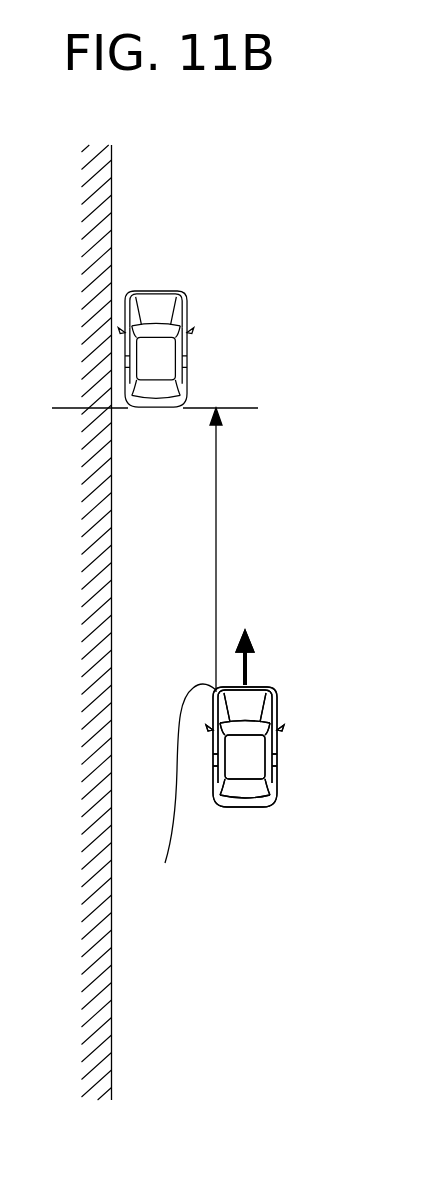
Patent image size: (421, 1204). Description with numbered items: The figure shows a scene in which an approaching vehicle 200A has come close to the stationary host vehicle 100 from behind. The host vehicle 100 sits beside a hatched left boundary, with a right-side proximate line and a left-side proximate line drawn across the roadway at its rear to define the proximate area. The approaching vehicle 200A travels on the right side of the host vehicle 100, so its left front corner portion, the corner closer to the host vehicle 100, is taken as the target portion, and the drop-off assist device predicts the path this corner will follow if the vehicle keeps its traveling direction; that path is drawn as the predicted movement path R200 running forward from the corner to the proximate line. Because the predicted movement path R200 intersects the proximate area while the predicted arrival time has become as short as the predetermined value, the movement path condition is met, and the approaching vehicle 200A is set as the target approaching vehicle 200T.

The host vehicle 100 is at (156, 290).
The predicted movement path R200 is at (216, 527).
The approaching vehicle 200A is at (245, 808).
The target approaching vehicle 200T is at (245, 808).